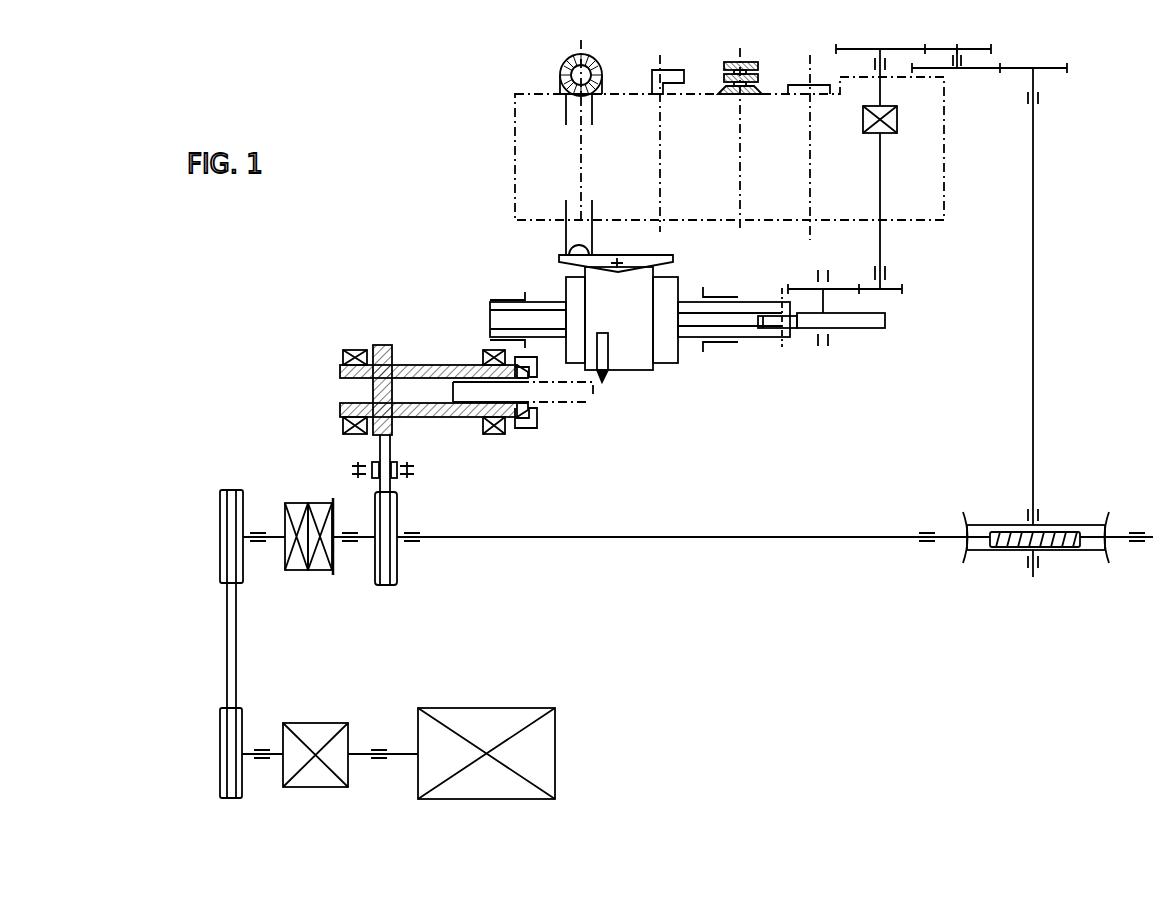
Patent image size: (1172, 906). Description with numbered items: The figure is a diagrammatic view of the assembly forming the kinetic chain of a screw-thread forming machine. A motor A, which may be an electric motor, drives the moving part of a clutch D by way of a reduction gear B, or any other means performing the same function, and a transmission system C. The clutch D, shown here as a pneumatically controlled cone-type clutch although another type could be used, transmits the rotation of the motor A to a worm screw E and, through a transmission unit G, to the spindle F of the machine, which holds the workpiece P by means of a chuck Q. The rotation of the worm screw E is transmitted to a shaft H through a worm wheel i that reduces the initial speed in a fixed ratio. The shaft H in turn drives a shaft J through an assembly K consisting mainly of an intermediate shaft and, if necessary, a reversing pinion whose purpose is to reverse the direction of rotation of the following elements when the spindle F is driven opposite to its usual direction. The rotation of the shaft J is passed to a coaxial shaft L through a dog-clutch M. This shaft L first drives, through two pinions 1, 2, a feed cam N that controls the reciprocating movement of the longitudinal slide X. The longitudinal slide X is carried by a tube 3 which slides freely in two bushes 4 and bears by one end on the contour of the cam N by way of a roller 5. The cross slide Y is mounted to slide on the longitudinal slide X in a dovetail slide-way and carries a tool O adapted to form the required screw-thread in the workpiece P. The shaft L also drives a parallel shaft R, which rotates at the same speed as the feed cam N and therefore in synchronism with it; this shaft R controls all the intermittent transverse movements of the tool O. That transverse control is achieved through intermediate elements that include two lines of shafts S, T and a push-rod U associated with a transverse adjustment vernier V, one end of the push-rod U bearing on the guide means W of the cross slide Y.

The motor A is at (525, 722).
The reduction gear B is at (312, 733).
The transmission system C is at (228, 635).
The clutch D is at (297, 505).
The worm screw E is at (995, 545).
The spindle F is at (460, 408).
The transmission unit G is at (391, 448).
The shaft H is at (1036, 142).
The worm wheel i is at (1090, 525).
The shaft J is at (878, 52).
The assembly K is at (958, 60).
The shaft L is at (880, 244).
The dog-clutch M is at (897, 122).
The feed cam N is at (862, 322).
The tool O is at (603, 350).
The workpiece P is at (578, 395).
The chuck Q is at (530, 415).
The shaft R is at (808, 120).
The line of shafts S is at (738, 118).
The line of shafts T is at (657, 117).
The push-rod U is at (567, 215).
The transverse adjustment vernier V is at (578, 120).
The guide means W is at (653, 258).
The longitudinal slide X is at (673, 288).
The cross slide Y is at (637, 360).
The pinion 1 is at (896, 290).
The pinion 2 is at (805, 288).
The tube 3 is at (512, 318).
The bushes 4 is at (495, 300).
The roller 5 is at (770, 320).